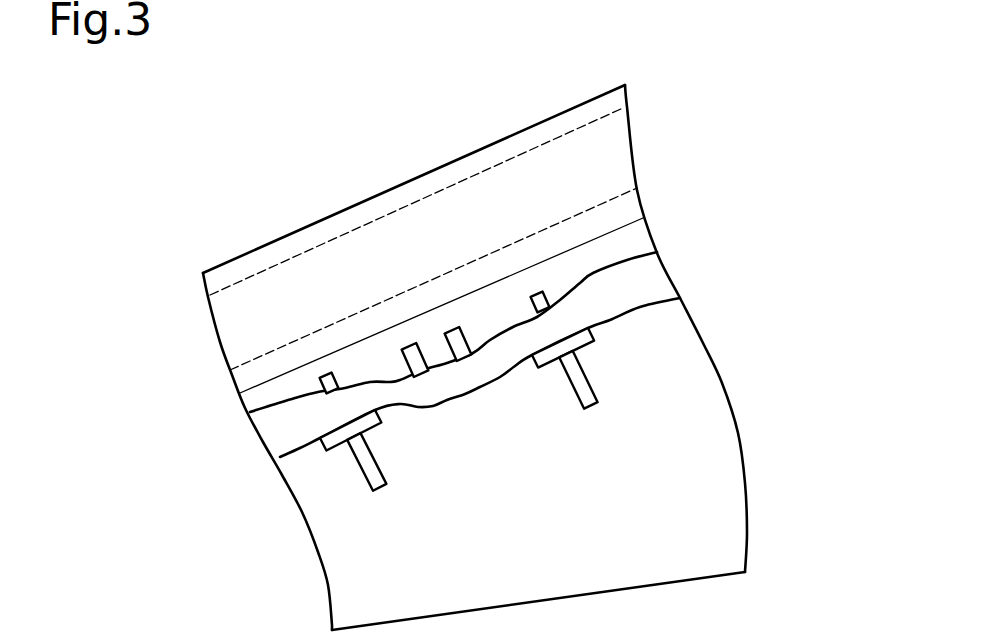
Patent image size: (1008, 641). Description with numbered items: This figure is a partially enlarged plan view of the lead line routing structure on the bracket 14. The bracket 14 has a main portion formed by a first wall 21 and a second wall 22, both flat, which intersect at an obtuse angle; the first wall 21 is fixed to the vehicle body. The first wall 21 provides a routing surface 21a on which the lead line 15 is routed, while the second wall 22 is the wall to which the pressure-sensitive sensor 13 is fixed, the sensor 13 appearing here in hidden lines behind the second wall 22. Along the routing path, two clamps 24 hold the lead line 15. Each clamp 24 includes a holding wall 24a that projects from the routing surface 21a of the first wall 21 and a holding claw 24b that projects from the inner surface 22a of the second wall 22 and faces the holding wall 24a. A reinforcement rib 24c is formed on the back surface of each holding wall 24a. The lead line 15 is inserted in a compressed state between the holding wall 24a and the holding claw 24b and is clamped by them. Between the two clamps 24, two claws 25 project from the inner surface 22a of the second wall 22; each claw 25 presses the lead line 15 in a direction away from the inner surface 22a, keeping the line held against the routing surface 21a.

The pressure-sensitive sensor 13 is at (255, 278).
The bracket 14 is at (531, 126).
The lead line 15 is at (277, 433).
The first wall 21 is at (540, 357).
The routing surface 21a is at (715, 435).
The second wall 22 is at (338, 223).
The inner surface 22a is at (253, 402).
The clamp 24 is at (456, 432).
The holding wall 24a is at (377, 428).
The holding claw 24b is at (324, 374).
The reinforcement rib 24c is at (358, 468).
The claw 25 is at (452, 330).